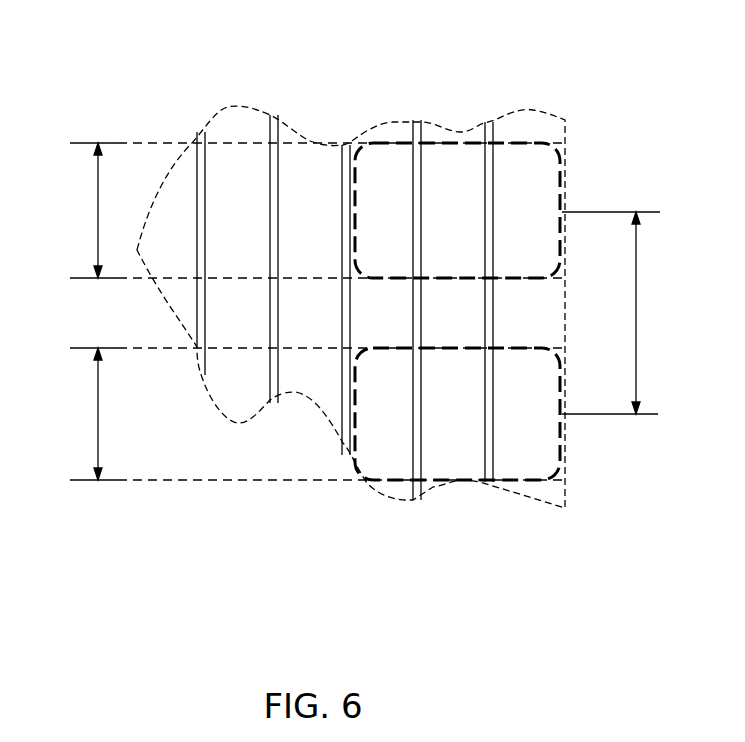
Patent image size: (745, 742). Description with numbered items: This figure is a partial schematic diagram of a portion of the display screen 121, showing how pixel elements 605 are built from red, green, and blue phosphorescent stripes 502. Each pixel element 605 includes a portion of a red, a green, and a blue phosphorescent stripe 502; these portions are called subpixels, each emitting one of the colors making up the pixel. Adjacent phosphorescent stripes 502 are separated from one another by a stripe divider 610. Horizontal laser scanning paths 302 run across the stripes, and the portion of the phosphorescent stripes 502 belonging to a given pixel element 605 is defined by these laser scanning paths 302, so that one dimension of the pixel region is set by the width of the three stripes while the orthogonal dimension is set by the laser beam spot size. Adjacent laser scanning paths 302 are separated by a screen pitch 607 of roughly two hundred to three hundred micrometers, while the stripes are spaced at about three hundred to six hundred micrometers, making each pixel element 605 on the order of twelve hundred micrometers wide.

The display screen 121 is at (143, 92).
The laser scanning paths 302 is at (97, 228).
The phosphorescent stripe 502 is at (233, 453).
The pixel element 605 is at (560, 150).
The screen pitch 607 is at (637, 345).
The stripe divider 610 is at (198, 102).